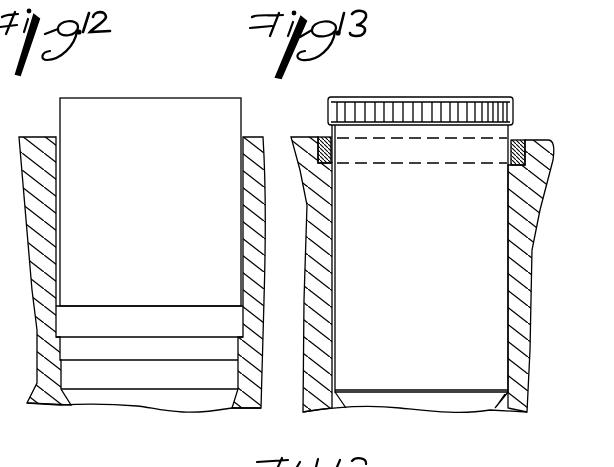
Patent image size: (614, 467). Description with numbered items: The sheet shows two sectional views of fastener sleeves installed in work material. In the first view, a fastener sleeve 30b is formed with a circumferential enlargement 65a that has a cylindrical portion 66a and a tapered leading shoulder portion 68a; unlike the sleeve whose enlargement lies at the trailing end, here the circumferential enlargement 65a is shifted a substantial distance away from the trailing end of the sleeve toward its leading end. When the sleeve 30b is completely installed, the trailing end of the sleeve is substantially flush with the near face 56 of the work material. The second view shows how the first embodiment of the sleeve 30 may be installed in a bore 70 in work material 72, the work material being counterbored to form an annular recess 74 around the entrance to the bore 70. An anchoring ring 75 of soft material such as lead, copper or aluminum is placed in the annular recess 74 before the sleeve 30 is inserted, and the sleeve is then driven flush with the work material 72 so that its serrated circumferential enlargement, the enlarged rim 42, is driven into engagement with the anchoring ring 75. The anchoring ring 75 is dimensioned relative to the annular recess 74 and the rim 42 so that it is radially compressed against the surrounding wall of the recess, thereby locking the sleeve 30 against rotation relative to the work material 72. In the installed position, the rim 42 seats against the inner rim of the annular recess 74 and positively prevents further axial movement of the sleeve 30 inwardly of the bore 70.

In FIG. 12, the near face 56 is at (41, 137).
In FIG. 12, the fastener sleeve 30b is at (177, 207).
In FIG. 12, the cylindrical portion 66a is at (135, 322).
In FIG. 12, the circumferential enlargement 65a is at (244, 328).
In FIG. 12, the tapered leading shoulder portion 68a is at (138, 350).
In FIG. 13, the anchoring ring 75 is at (322, 140).
In FIG. 13, the enlarged rim 42 is at (509, 116).
In FIG. 13, the annular recess 74 is at (521, 143).
In FIG. 13, the work material 72 is at (526, 181).
In FIG. 13, the bore 70 is at (513, 231).
In FIG. 13, the sleeve 30 is at (440, 263).